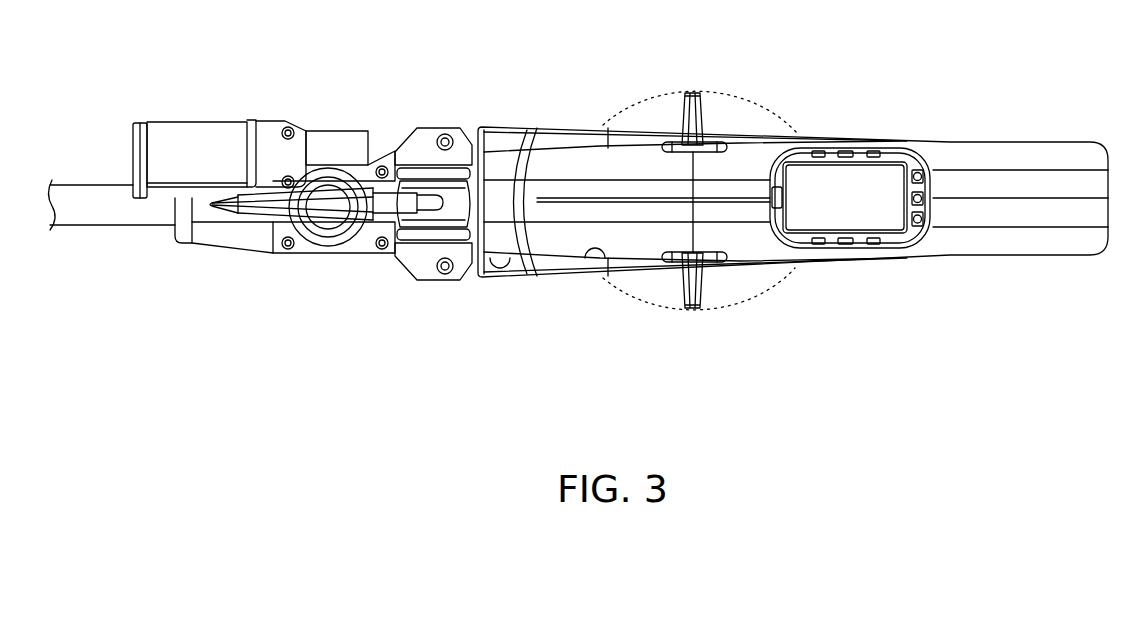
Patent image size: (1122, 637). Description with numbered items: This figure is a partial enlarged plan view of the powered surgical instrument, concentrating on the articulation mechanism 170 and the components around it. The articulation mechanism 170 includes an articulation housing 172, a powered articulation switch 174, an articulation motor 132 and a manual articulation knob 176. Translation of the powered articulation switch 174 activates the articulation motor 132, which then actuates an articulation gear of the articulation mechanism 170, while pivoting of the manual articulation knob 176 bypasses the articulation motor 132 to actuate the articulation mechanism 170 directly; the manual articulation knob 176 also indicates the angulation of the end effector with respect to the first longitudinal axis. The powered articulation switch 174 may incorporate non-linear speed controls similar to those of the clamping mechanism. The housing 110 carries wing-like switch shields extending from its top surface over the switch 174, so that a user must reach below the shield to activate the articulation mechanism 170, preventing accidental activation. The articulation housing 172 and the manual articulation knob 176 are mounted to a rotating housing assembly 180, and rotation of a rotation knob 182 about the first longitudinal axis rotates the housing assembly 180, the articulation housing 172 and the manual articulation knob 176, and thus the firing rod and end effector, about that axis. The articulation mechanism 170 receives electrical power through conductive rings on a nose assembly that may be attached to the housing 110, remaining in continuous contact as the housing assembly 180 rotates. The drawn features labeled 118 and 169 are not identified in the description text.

The housing 110 is at (962, 257).
The main body housing 118 is at (967, 105).
The articulation motor 132 is at (158, 121).
The propeller 169 is at (708, 93).
The articulation mechanism 170 is at (231, 96).
The articulation housing 172 is at (313, 256).
The powered articulation switch 174 is at (689, 107).
The manual articulation knob 176 is at (322, 197).
The rotating housing assembly 180 is at (385, 288).
The rotation knob 182 is at (441, 283).